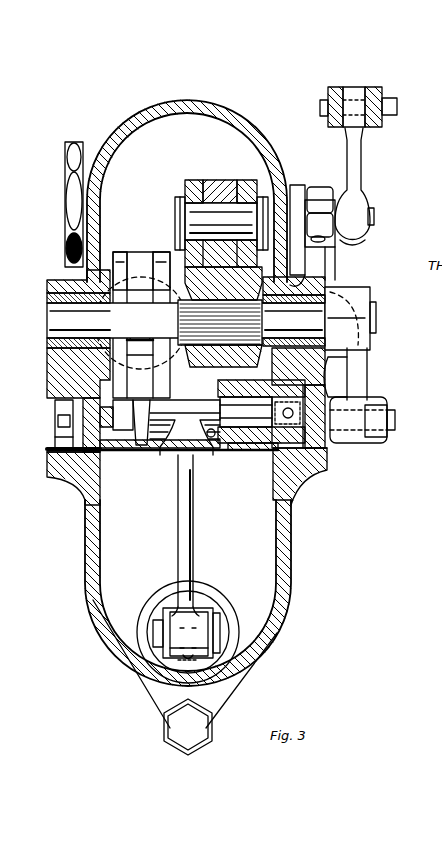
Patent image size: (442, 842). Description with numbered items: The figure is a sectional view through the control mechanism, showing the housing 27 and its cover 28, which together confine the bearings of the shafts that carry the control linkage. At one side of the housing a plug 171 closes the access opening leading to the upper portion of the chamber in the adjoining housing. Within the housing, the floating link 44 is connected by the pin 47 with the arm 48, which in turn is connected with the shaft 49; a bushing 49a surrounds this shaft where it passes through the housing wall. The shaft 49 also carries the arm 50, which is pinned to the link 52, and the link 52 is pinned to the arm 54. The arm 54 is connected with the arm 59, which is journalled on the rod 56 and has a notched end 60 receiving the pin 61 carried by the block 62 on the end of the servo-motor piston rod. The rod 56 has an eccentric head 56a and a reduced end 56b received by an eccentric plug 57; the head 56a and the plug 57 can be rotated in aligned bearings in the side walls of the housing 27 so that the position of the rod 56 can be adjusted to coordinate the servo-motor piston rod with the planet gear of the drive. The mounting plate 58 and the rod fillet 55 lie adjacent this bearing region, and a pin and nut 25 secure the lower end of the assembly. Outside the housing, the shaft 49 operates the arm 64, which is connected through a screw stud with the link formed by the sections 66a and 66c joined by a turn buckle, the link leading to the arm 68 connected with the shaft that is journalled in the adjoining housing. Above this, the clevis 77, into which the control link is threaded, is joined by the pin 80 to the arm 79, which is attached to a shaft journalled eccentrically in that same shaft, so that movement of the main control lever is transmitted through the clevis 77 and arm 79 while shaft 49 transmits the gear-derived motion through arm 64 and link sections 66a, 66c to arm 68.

The cover 28 is at (199, 102).
The housing 27 is at (292, 576).
The plug 171 is at (70, 160).
The pin 47 is at (178, 197).
The floating link 44 is at (196, 180).
The arm 48 is at (223, 180).
The arm 50 is at (137, 252).
The link 52 is at (117, 252).
The clevis 77 is at (336, 87).
The pin 80 is at (397, 107).
The arm 79 is at (361, 170).
The arm 68 is at (340, 256).
The shaft bushing 49a is at (47, 297).
The shaft 49 is at (47, 318).
The arm 64 is at (367, 372).
The link section 66c is at (372, 397).
The link section 66a is at (372, 447).
The eccentric head 56a is at (55, 428).
The mounting plate 58 is at (47, 456).
The arm 54 is at (134, 444).
The rod upper end 55 is at (160, 455).
The pin / nut 25 is at (212, 442).
The rod 56 is at (243, 443).
The reduced end 56b is at (290, 435).
The eccentric plug 57 is at (275, 478).
The arm 59 is at (177, 540).
The block 62 is at (207, 617).
The pin 61 is at (153, 632).
The notched end 60 is at (190, 652).